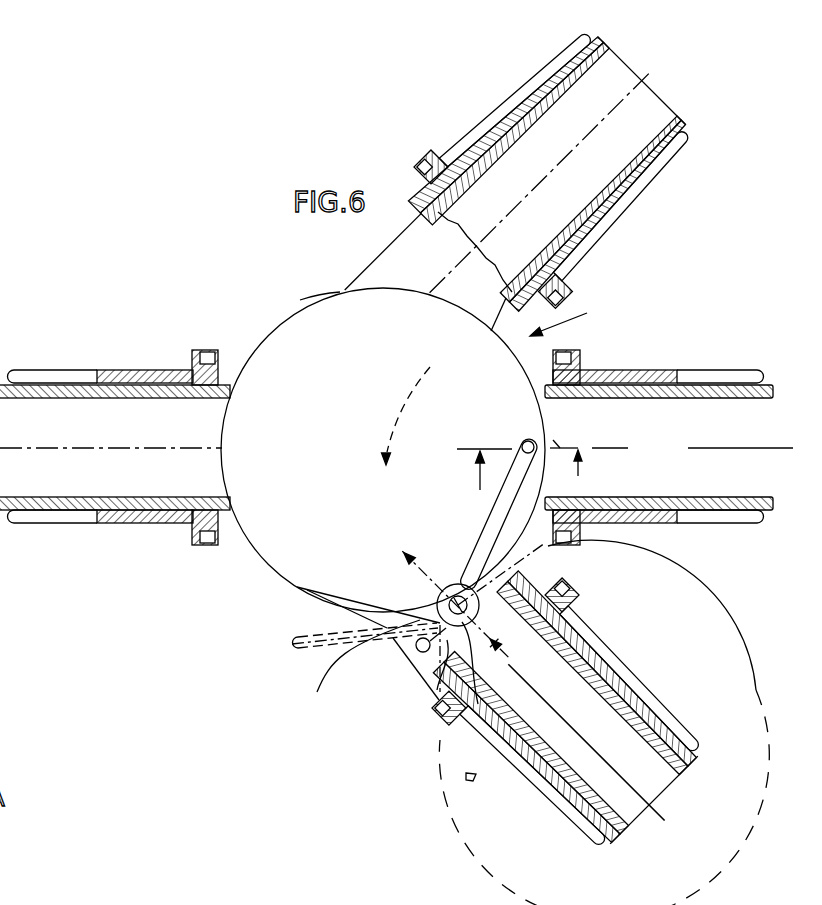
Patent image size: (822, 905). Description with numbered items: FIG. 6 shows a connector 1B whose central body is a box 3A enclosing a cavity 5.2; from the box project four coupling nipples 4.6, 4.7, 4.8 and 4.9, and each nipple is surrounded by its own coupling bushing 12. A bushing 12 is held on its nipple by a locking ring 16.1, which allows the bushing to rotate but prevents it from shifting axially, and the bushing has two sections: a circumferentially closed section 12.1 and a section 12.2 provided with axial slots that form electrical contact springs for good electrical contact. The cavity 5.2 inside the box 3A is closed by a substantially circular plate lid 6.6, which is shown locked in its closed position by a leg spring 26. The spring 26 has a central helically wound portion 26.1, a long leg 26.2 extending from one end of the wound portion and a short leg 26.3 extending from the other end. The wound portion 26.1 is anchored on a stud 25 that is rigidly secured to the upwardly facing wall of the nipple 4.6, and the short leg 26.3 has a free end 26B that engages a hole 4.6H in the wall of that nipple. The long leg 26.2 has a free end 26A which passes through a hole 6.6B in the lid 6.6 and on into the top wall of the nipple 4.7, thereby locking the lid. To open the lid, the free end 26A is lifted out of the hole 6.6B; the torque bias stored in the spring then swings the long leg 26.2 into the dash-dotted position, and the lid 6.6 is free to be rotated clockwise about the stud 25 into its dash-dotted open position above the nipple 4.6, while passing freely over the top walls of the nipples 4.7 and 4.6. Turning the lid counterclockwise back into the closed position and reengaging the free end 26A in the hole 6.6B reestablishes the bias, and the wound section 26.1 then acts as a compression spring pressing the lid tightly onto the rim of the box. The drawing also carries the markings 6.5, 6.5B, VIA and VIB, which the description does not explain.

The coupling bushing 12 is at (386, 439).
The bushing section 12.1 is at (143, 517).
The bushing section 12.2 is at (50, 520).
The coupling nipple 4.9 is at (115, 447).
The coupling nipple 4.7 is at (760, 489).
The coupling nipple 4.8 is at (605, 108).
The coupling nipple 4.6 is at (632, 822).
The hole 4.6H is at (343, 676).
The plate lid 6.6 is at (336, 463).
The hole 6.6B is at (581, 432).
The pivot housing 6.5 is at (683, 642).
The pivot housing stop 6.5B is at (466, 778).
The cavity 5.2 is at (305, 322).
The locking ring 16.1 is at (180, 498).
The central box 3A is at (421, 407).
The connector 1B is at (575, 317).
The stud 25 is at (447, 585).
The leg spring 26 is at (428, 600).
The free end 26A is at (524, 441).
The free end 26B is at (417, 650).
The helically wound portion 26.1 is at (583, 742).
The long leg 26.2 is at (640, 466).
The short leg 26.3 is at (436, 653).
The section line VIA is at (400, 558).
The section line VIB is at (463, 485).